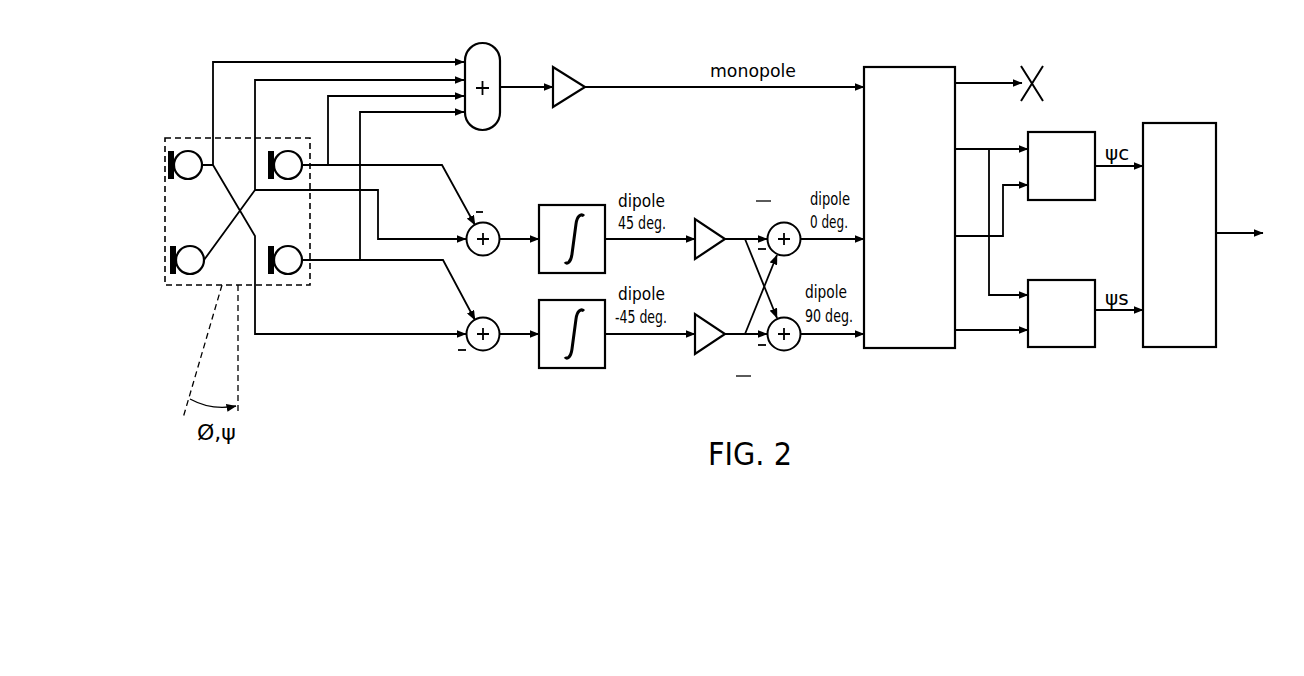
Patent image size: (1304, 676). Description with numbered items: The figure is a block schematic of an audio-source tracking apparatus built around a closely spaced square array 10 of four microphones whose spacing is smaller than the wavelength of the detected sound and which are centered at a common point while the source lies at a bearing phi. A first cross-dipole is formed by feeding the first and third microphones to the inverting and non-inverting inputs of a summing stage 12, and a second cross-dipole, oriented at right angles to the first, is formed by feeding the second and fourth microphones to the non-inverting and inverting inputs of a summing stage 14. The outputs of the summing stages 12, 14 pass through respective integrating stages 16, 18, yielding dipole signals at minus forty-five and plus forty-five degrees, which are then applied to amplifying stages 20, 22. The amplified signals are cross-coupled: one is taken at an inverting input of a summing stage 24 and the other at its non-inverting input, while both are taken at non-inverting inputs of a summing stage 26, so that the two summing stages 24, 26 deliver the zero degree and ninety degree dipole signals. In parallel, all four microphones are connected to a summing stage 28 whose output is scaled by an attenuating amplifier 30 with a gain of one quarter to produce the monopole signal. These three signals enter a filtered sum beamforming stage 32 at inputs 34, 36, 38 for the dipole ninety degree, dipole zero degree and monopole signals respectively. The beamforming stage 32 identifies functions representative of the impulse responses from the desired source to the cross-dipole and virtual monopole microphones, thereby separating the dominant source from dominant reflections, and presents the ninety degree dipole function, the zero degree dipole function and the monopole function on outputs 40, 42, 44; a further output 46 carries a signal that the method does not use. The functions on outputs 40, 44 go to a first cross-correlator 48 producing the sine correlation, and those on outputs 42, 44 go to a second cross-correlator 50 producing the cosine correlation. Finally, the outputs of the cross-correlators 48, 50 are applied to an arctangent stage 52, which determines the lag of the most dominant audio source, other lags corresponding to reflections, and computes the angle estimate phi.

The square array 10 is at (201, 133).
The summing stage 12 is at (486, 351).
The summing stage 14 is at (486, 223).
The integrating stage 16 is at (575, 368).
The integrating stage 18 is at (571, 205).
The amplifying stage 20 is at (695, 340).
The amplifying stage 22 is at (696, 216).
The summing stage 24 is at (790, 351).
The summing stage 26 is at (780, 223).
The summing stage 28 is at (494, 126).
The attenuating amplifier 30 is at (575, 98).
The filtered sum beamforming stage 32 is at (863, 142).
The input 34 is at (868, 334).
The input 36 is at (868, 239).
The input 38 is at (871, 73).
The output 40 is at (955, 330).
The output 42 is at (955, 236).
The output 44 is at (955, 149).
The further output 46 is at (1040, 83).
The first cross-correlator 48 is at (1060, 347).
The second cross-correlator 50 is at (1078, 200).
The arctangent stage 52 is at (1217, 312).